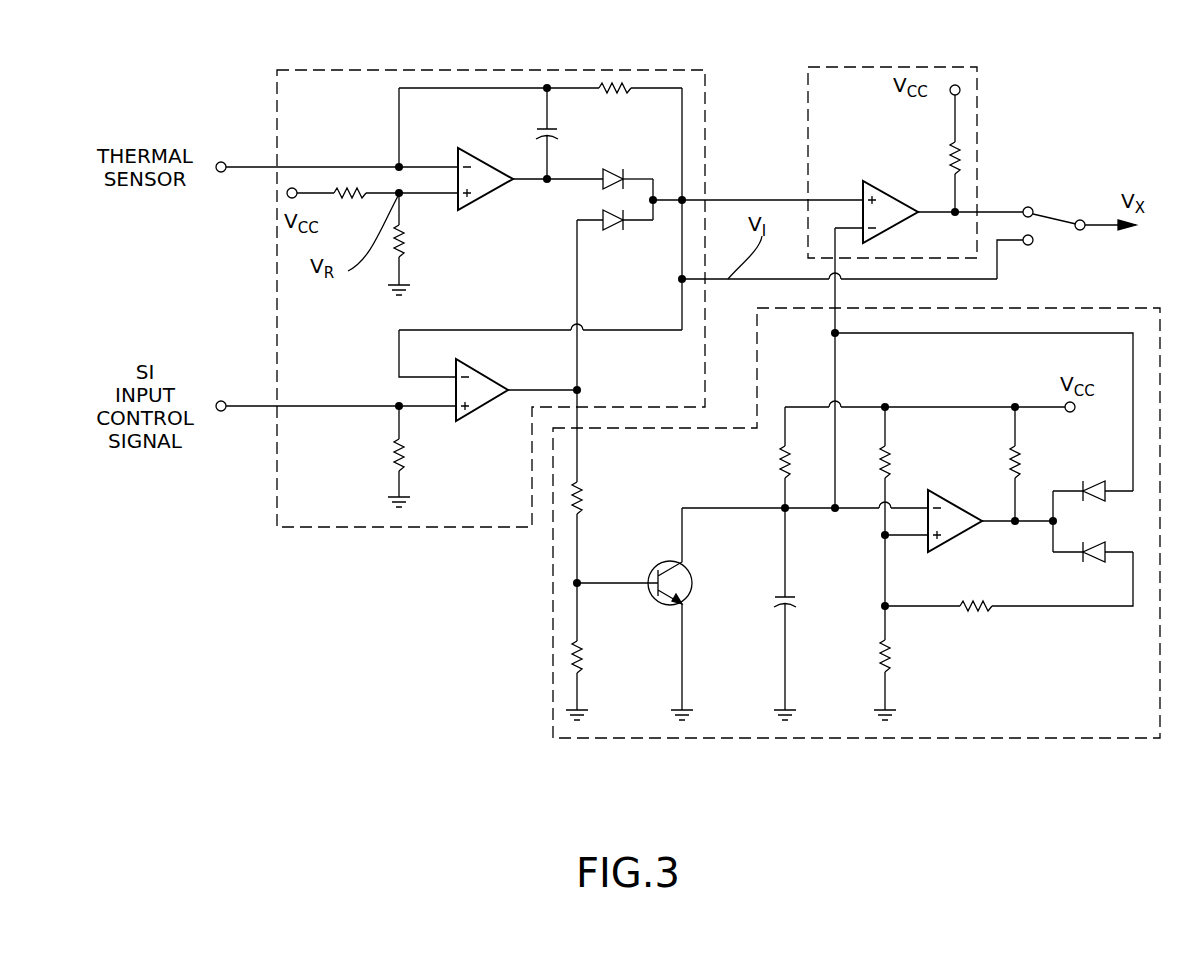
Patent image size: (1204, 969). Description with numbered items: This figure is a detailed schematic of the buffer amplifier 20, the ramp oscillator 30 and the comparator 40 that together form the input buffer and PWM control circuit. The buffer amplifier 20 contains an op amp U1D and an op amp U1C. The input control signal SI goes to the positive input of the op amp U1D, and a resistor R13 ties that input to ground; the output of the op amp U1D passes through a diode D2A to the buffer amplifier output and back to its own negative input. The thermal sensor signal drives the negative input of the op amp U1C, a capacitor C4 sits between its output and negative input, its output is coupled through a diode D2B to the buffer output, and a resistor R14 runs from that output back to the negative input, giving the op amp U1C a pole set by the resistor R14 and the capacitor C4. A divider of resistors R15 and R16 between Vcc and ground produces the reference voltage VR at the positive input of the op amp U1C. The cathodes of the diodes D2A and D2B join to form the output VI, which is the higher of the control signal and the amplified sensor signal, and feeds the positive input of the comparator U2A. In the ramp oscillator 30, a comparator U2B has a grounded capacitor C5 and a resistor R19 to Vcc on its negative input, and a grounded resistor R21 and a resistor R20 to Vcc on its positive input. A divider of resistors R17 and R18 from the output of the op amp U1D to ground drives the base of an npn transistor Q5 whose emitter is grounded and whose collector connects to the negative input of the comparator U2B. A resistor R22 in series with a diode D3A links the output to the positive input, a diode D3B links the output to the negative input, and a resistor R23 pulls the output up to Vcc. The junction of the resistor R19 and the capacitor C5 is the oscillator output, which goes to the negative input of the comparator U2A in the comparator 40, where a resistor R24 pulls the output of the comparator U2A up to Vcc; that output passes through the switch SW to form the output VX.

The buffer amplifier 20 is at (277, 480).
The ramp oscillator 30 is at (553, 680).
The comparator 40 is at (893, 67).
The resistor R13 is at (419, 456).
The resistor R14 is at (540, 102).
The resistor R15 is at (377, 207).
The resistor R16 is at (420, 244).
The resistor R17 is at (600, 498).
The resistor R18 is at (598, 680).
The resistor R19 is at (762, 502).
The resistor R20 is at (907, 506).
The resistor R21 is at (905, 663).
The resistor R22 is at (1009, 581).
The resistor R23 is at (990, 464).
The resistor R24 is at (932, 153).
The capacitor C4 is at (529, 133).
The capacitor C5 is at (803, 654).
The diode D2A is at (615, 239).
The diode D2B is at (627, 164).
The diode D3A is at (1093, 570).
The diode D3B is at (1093, 475).
The op amp U1C is at (489, 187).
The op amp U1D is at (486, 386).
The comparator U2A is at (890, 208).
The comparator U2B is at (956, 520).
The npn transistor Q5 is at (652, 614).
The switch SW is at (1041, 230).